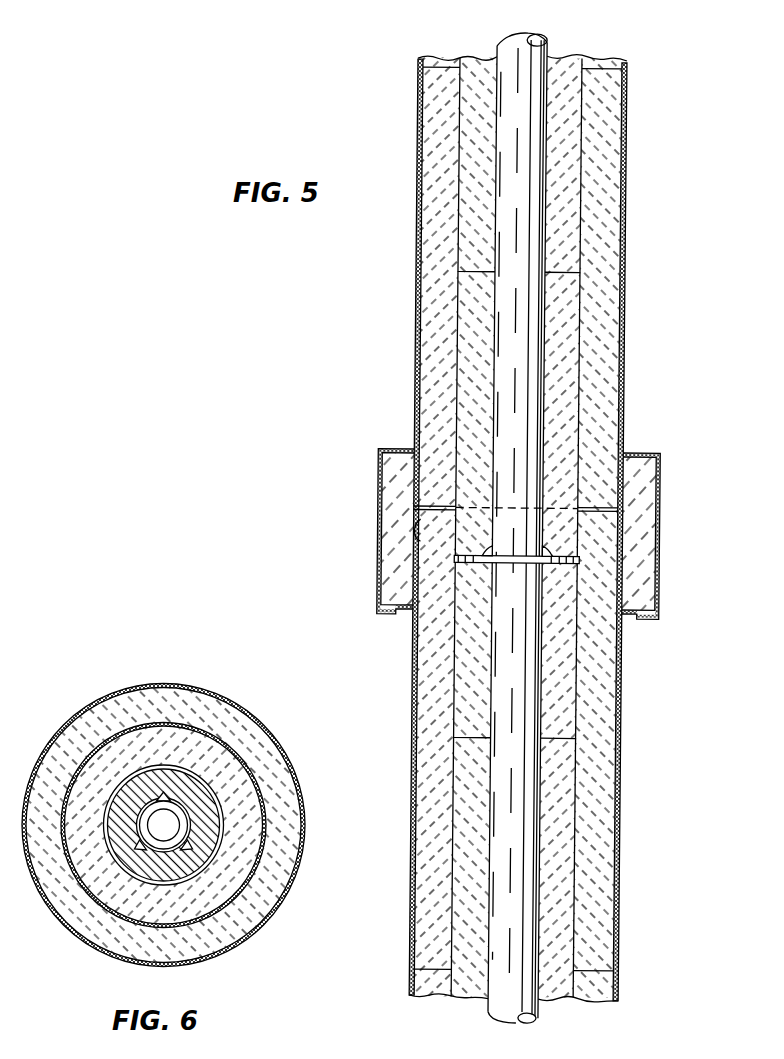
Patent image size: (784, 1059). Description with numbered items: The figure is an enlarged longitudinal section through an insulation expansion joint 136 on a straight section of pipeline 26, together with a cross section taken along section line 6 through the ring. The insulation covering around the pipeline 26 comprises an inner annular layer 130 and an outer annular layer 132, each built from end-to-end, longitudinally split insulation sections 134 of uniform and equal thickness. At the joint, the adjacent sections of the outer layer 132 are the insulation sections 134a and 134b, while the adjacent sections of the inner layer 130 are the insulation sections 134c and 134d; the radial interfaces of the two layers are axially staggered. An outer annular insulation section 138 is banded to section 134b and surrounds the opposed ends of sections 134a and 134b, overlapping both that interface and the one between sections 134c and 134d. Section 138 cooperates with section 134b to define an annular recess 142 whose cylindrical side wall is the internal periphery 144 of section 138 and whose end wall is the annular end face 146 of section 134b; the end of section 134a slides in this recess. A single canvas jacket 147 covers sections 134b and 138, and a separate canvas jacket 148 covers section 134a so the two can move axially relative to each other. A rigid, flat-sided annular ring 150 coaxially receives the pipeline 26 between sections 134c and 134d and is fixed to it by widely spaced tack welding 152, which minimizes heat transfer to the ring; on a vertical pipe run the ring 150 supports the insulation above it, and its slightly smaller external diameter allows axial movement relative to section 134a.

In FIG. 5, the pipeline 26 is at (545, 329).
In FIG. 6, the pipeline 26 is at (164, 852).
In FIG. 5, the inner annular layer 130 is at (583, 97).
In FIG. 5, the outer annular layer 132 is at (627, 142).
In FIG. 5, the insulation sections 134 is at (585, 197).
In FIG. 5, the insulation section 134a is at (600, 768).
In FIG. 5, the insulation section 134b is at (605, 420).
In FIG. 5, the insulation section 134c is at (460, 372).
In FIG. 5, the insulation section 134d is at (460, 648).
In FIG. 6, the insulation section 134d is at (222, 827).
In FIG. 5, the insulation expansion joint 136 is at (372, 596).
In FIG. 5, the outer annular insulation section 138 is at (650, 478).
In FIG. 6, the outer annular insulation section 138 is at (217, 707).
In FIG. 5, the annular recess 142 is at (613, 548).
In FIG. 6, the annular recess 142 is at (222, 758).
In FIG. 5, the internal periphery 144 is at (413, 540).
In FIG. 5, the annular end face 146 is at (620, 518).
In FIG. 5, the canvas jacket 147 is at (627, 297).
In FIG. 6, the canvas jacket 147 is at (302, 804).
In FIG. 5, the canvas jacket 148 is at (622, 645).
In FIG. 5, the annular ring 150 is at (514, 566).
In FIG. 6, the annular ring 150 is at (153, 794).
In FIG. 5, the tack welding 152 is at (542, 554).
In FIG. 6, the tack welding 152 is at (164, 795).
In FIG. 5, the section line 6— 6 is at (342, 522).